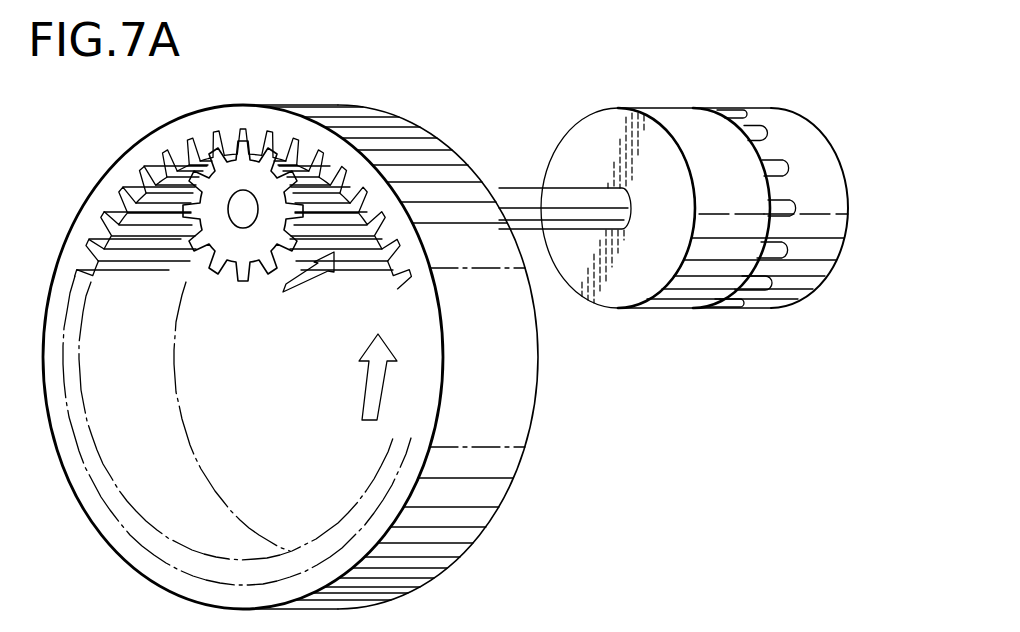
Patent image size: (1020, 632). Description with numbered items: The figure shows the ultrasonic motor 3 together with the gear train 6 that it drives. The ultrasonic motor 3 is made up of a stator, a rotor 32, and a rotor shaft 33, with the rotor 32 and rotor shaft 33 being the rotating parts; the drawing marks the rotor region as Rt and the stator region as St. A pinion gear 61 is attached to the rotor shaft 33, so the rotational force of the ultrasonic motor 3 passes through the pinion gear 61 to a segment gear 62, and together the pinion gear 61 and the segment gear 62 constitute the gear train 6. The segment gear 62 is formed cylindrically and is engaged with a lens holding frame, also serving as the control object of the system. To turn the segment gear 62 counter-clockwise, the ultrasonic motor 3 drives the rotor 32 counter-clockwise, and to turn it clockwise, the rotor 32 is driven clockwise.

The ultrasonic motor 3 is at (814, 76).
The gear train 6 is at (399, 73).
The rotor 32 is at (673, 108).
The rotor shaft 33 is at (503, 185).
The pinion gear 61 is at (237, 282).
The segment gear 62 is at (117, 173).
The rotor Rt is at (646, 95).
The stator St is at (746, 95).